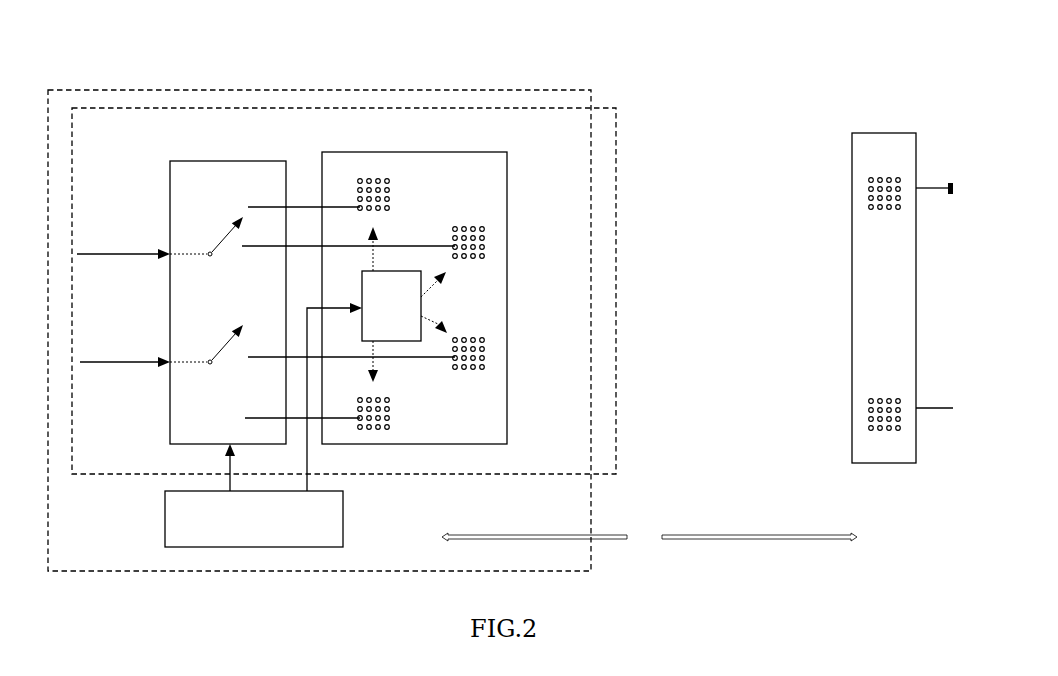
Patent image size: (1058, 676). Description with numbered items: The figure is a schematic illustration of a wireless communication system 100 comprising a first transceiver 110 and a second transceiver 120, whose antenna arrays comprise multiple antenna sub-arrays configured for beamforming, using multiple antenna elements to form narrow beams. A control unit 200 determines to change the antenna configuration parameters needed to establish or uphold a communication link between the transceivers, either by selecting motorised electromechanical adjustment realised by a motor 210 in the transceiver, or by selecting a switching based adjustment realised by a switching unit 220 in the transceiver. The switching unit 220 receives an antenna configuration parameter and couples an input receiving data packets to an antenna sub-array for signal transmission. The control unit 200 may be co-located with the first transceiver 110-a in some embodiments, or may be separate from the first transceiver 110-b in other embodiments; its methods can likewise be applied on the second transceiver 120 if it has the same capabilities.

The wireless communication system 100 is at (890, 61).
The first transceiver 110 is at (448, 298).
The first transceiver 110-a is at (530, 90).
The first transceiver 110-b is at (648, 130).
The second transceiver 120 is at (852, 167).
The control unit 200 is at (254, 519).
The motor 210 is at (391, 306).
The switching unit 220 is at (190, 161).